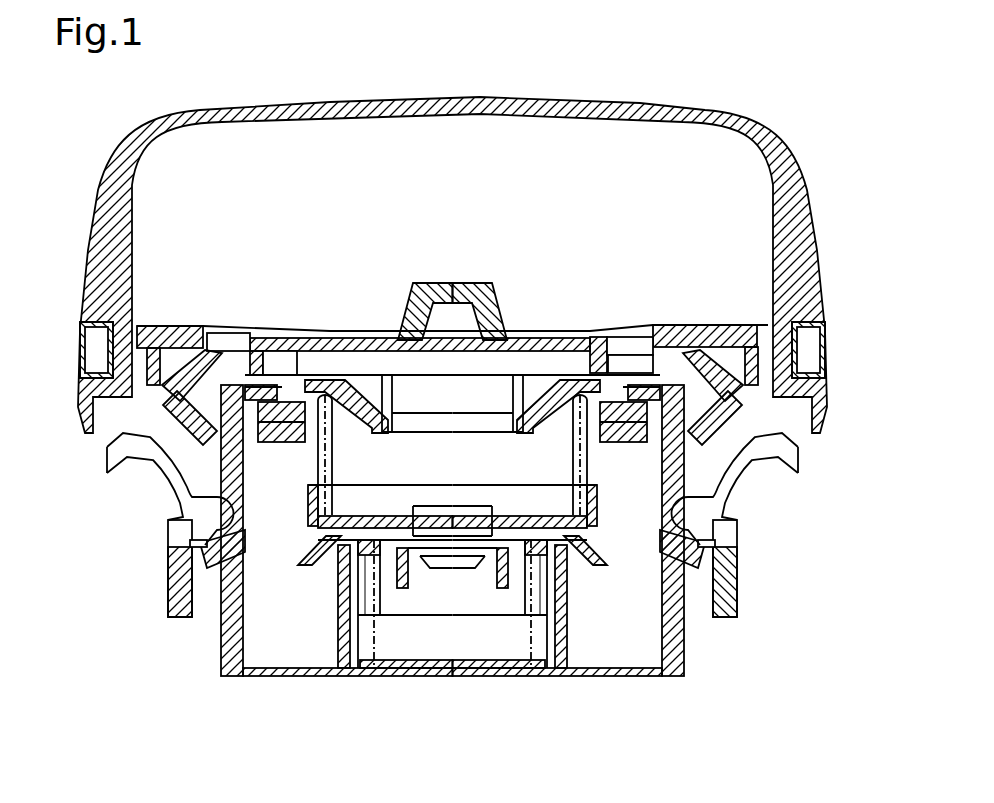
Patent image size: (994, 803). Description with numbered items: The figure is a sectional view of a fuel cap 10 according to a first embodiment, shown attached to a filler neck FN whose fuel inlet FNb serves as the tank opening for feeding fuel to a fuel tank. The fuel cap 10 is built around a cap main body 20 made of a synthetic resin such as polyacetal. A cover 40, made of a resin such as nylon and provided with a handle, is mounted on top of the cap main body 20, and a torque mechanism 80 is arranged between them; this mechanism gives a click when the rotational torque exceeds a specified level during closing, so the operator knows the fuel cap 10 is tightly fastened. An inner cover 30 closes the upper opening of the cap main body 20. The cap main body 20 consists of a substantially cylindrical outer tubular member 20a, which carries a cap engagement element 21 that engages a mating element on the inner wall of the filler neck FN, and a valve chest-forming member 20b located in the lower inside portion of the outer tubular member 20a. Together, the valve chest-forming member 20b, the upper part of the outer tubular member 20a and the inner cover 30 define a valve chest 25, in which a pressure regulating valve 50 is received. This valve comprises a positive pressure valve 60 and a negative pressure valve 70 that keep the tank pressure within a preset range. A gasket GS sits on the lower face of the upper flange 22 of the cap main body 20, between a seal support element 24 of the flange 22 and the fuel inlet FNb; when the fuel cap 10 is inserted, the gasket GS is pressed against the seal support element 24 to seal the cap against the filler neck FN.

The fuel cap 10 is at (786, 52).
The cover 40 is at (763, 123).
The torque mechanism 80 is at (666, 325).
The inner cover 30 is at (733, 367).
The upper flange 22 is at (760, 388).
The seal support element 24 is at (745, 418).
The gasket GS is at (760, 430).
The fuel inlet FNb is at (700, 470).
The filler neck FN is at (695, 538).
The cap engagement element 21 is at (198, 557).
The cap main body 20 is at (478, 560).
The outer tubular member 20a is at (228, 545).
The valve chest-forming member 20b is at (345, 613).
The valve chest 25 is at (549, 648).
The negative pressure valve 70 is at (547, 598).
The positive pressure valve 60 is at (625, 540).
The pressure regulating valve 50 is at (485, 626).